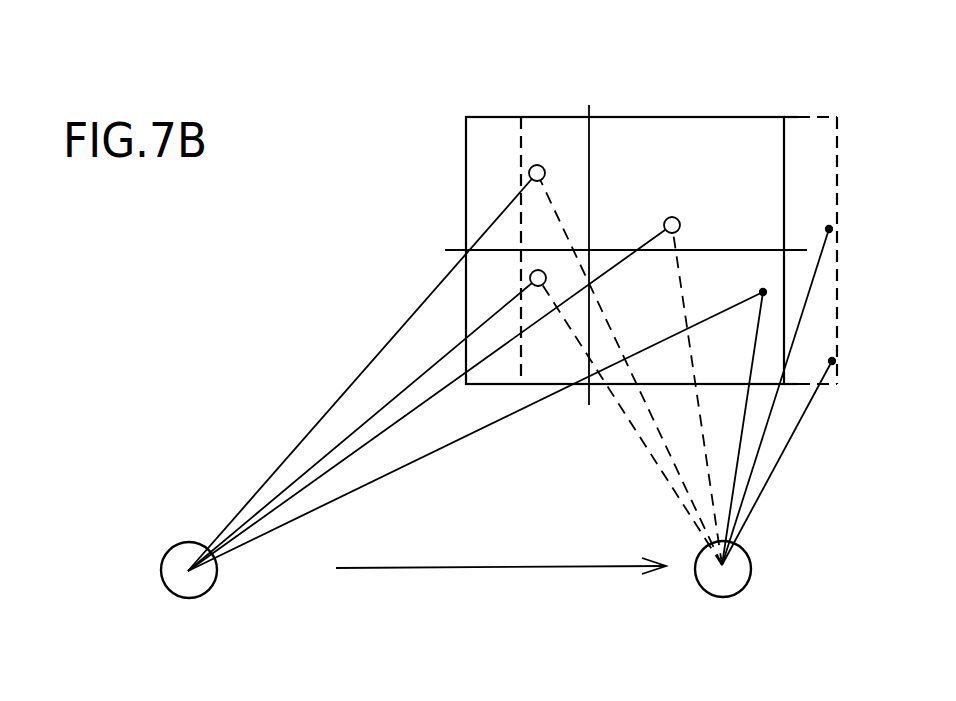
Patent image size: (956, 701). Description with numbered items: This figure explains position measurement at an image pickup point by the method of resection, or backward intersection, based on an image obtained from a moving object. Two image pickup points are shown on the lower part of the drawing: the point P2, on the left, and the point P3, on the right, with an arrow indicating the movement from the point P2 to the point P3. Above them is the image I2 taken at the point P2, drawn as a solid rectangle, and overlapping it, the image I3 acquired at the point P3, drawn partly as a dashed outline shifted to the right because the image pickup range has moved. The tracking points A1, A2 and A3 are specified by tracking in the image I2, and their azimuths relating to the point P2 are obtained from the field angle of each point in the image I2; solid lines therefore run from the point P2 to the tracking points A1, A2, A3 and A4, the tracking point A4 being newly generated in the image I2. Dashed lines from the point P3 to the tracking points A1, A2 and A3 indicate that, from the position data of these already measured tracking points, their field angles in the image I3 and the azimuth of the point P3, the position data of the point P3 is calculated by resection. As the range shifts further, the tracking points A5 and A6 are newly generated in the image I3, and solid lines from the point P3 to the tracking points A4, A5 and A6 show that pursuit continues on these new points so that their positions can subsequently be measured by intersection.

The image taken at P2 I2 is at (504, 117).
The image acquired at P3 I3 is at (821, 117).
The tracking point A1 is at (540, 159).
The tracking point A2 is at (554, 269).
The tracking point A3 is at (668, 212).
The tracking point A4 is at (760, 279).
The tracking point A5 is at (816, 216).
The tracking point A6 is at (820, 348).
The image pickup point P2 is at (189, 595).
The image pickup point P3 is at (723, 595).